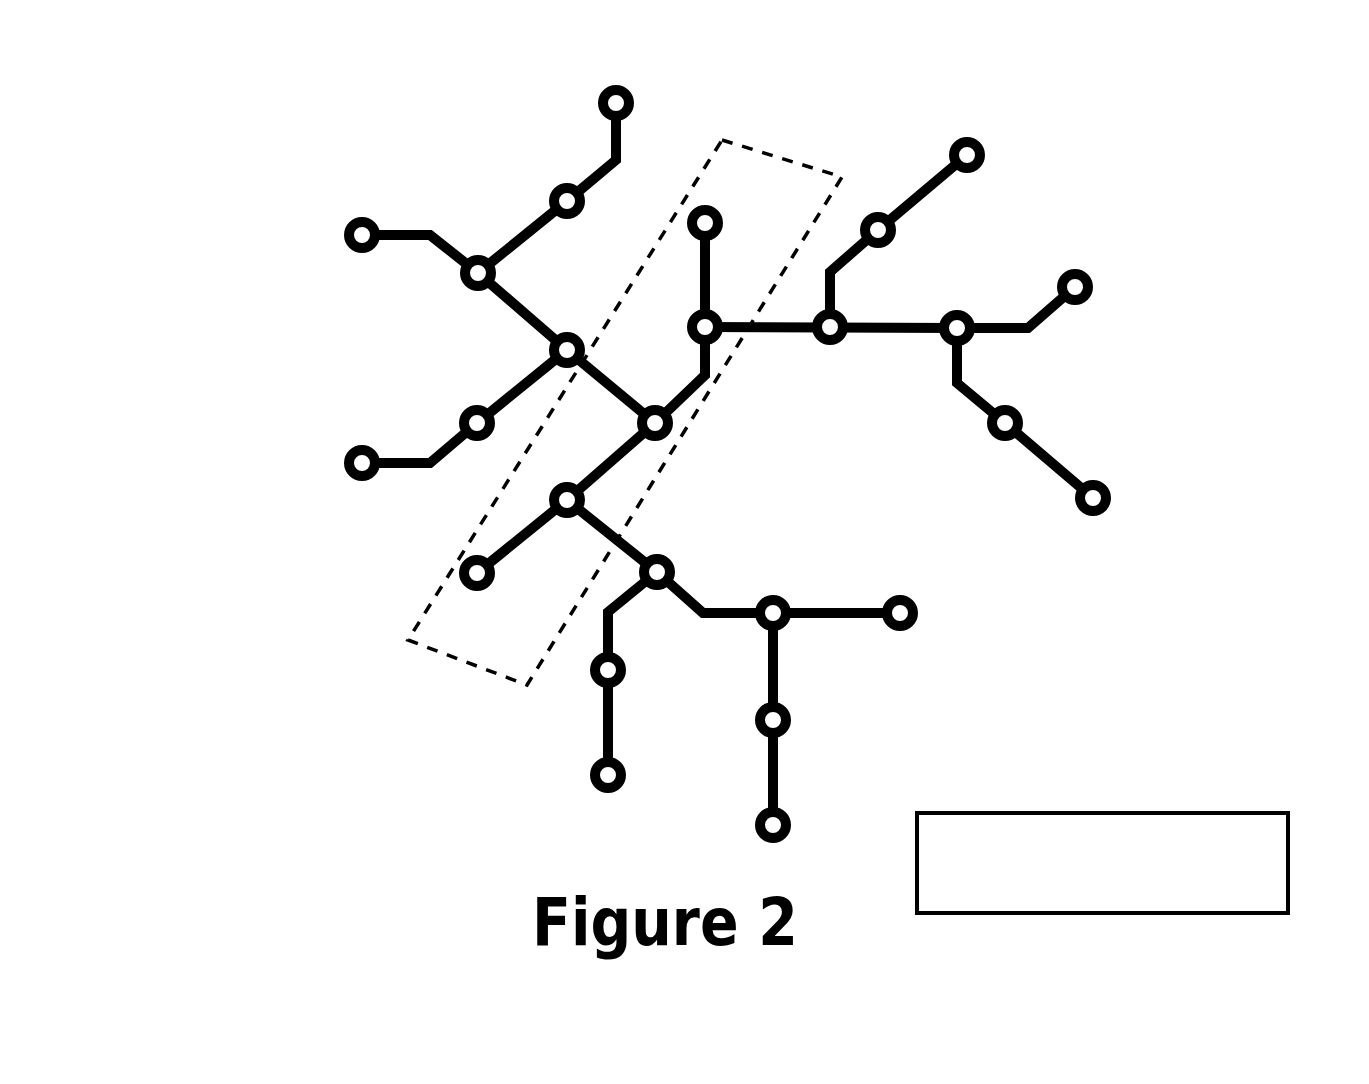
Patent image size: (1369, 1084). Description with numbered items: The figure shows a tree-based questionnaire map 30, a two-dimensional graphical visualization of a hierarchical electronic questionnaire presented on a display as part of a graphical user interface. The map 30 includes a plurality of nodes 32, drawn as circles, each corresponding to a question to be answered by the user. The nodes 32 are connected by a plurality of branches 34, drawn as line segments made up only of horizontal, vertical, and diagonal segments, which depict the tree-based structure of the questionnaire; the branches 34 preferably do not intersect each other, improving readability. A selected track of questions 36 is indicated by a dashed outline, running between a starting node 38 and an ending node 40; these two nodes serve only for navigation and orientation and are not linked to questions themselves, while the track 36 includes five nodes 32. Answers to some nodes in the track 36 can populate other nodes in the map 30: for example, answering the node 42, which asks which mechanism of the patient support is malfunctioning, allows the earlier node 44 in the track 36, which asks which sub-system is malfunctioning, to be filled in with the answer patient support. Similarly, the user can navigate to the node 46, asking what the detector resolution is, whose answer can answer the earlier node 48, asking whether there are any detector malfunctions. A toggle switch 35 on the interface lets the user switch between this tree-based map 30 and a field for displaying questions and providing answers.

The tree-based questionnaire map 30 is at (162, 105).
The node 32 is at (345, 232).
The branch 34 is at (830, 620).
The toggle switch 35 is at (1238, 773).
The selected track of questions 36 is at (493, 675).
The starting node 38 is at (720, 210).
The ending node 40 is at (462, 580).
The node 42 is at (843, 340).
The node 44 is at (730, 340).
The node 46 is at (673, 565).
The node 48 is at (585, 507).